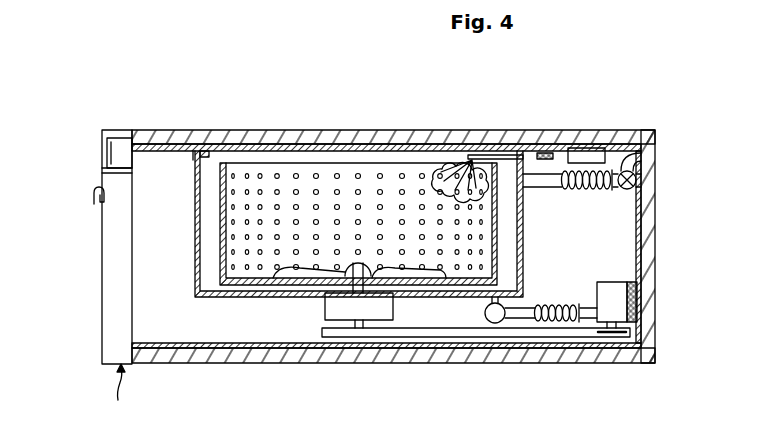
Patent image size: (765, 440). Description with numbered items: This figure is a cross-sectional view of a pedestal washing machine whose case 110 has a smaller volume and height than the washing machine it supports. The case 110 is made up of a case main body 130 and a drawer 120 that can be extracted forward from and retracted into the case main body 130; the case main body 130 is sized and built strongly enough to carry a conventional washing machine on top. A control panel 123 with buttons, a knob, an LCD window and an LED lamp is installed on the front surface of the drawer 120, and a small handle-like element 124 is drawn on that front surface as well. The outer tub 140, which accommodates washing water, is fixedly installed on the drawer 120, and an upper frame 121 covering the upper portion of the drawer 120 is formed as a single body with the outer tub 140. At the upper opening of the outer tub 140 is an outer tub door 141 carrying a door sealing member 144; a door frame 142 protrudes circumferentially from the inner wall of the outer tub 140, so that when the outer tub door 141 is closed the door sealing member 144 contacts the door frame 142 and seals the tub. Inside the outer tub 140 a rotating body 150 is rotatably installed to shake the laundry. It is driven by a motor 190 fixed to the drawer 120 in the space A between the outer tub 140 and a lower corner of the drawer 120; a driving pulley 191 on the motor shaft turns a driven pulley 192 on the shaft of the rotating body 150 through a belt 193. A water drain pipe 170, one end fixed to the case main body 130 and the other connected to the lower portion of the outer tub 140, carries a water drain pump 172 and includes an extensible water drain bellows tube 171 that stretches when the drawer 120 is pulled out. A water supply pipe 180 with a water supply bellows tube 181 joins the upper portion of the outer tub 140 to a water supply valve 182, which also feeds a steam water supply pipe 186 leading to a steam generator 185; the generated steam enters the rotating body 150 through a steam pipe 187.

The case 110 is at (118, 394).
The drawer 120 is at (117, 292).
The upper frame 121 is at (152, 143).
The control panel 123 is at (107, 149).
The door handle hook 124 is at (94, 201).
The case main body 130 is at (163, 352).
The outer tub 140 is at (197, 240).
The outer tub door 141 is at (373, 145).
The door frame 142 is at (207, 153).
The door sealing member 144 is at (199, 150).
The rotating body 150 is at (303, 170).
The water drain pipe 170 is at (526, 318).
The water drain bellows tube 171 is at (575, 322).
The water drain pump 172 is at (497, 325).
The water supply pipe 180 is at (547, 188).
The water supply bellows tube 181 is at (625, 162).
The water supply valve 182 is at (625, 190).
The steam generator 185 is at (585, 155).
The steam water supply pipe 186 is at (615, 153).
The steam pipe 187 is at (545, 152).
The motor 190 is at (633, 295).
The driving pulley 191 is at (612, 336).
The driven pulley 192 is at (357, 337).
The belt 193 is at (435, 332).
The space A is at (615, 253).